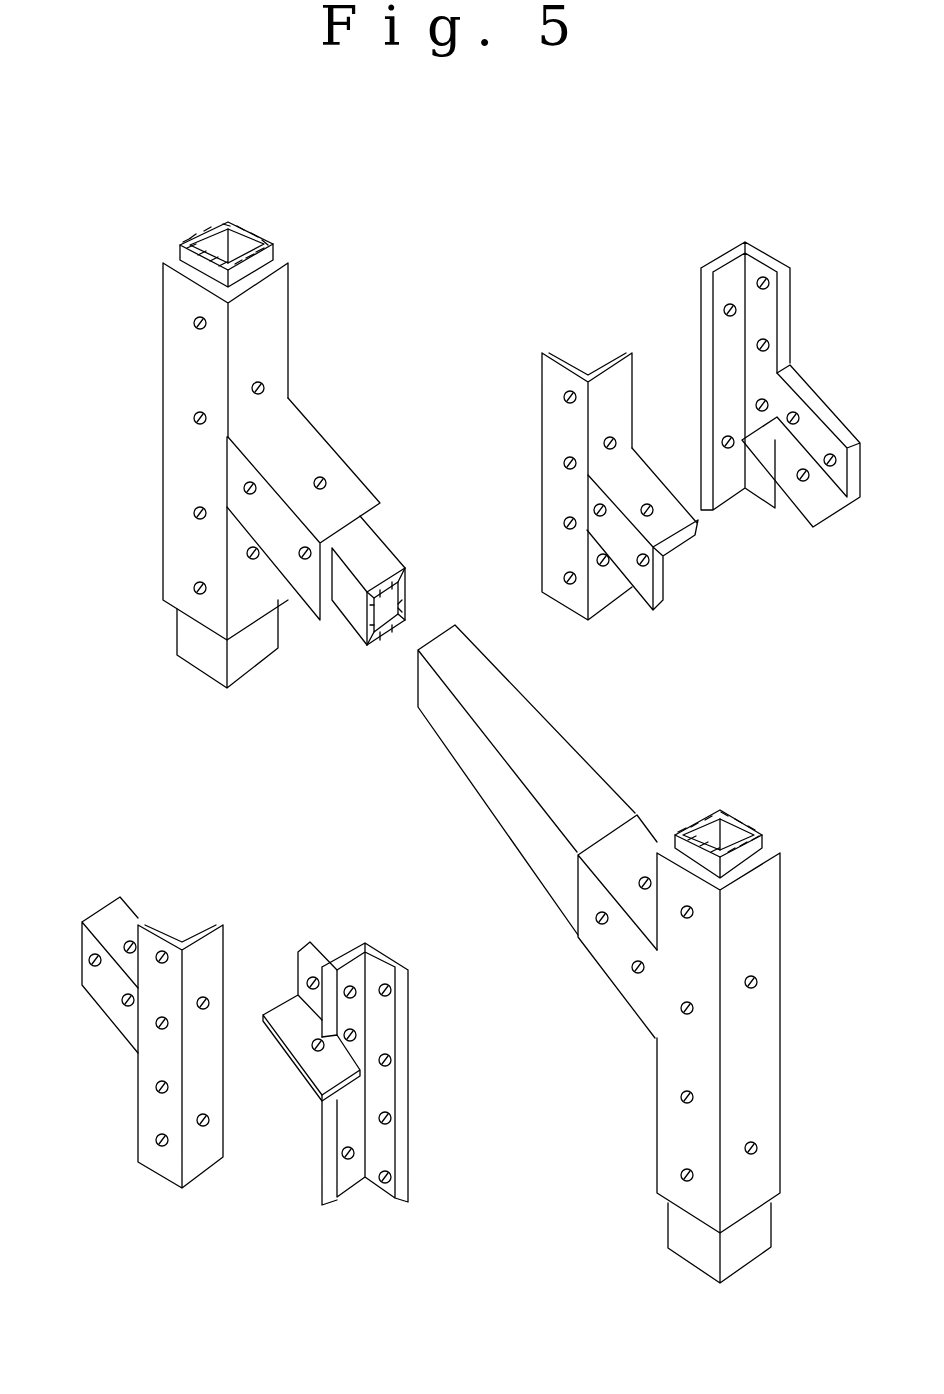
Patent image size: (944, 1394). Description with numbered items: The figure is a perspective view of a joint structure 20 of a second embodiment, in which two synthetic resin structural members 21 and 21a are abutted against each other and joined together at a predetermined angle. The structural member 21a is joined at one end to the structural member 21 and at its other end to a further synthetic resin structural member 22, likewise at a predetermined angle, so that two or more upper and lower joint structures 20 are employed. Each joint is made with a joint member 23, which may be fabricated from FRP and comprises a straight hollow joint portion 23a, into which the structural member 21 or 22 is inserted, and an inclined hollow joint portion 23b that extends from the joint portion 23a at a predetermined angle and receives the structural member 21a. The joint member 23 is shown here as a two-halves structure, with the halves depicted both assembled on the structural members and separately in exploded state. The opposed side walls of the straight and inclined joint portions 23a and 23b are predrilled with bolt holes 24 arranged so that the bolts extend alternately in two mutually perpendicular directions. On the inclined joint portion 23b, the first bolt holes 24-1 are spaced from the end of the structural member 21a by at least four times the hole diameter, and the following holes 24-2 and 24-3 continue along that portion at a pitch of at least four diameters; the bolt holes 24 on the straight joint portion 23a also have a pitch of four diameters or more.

The joint structure 20 is at (452, 282).
The structural member 21 is at (232, 243).
The structural member 21a is at (385, 556).
The structural member 22 is at (730, 833).
The joint member 23 is at (308, 295).
The hollow joint portion 23a is at (280, 331).
The inclined hollow joint portion 23b is at (350, 507).
The bolt holes 24 is at (195, 318).
The first bolt holes 24-1 is at (257, 484).
The bolt hole 24-2 is at (326, 485).
The bolt hole 24-3 is at (305, 560).